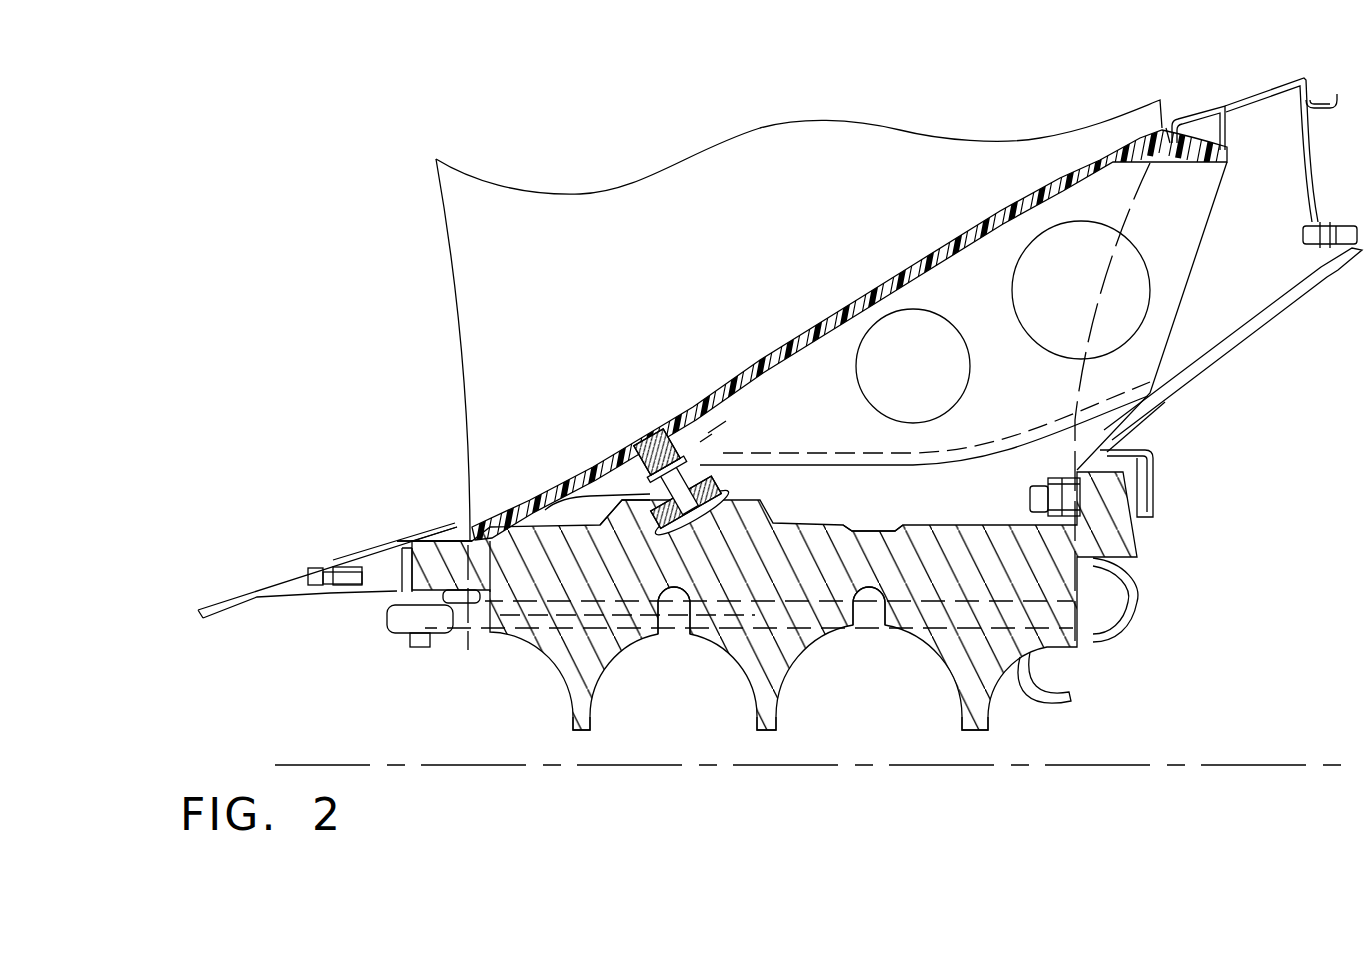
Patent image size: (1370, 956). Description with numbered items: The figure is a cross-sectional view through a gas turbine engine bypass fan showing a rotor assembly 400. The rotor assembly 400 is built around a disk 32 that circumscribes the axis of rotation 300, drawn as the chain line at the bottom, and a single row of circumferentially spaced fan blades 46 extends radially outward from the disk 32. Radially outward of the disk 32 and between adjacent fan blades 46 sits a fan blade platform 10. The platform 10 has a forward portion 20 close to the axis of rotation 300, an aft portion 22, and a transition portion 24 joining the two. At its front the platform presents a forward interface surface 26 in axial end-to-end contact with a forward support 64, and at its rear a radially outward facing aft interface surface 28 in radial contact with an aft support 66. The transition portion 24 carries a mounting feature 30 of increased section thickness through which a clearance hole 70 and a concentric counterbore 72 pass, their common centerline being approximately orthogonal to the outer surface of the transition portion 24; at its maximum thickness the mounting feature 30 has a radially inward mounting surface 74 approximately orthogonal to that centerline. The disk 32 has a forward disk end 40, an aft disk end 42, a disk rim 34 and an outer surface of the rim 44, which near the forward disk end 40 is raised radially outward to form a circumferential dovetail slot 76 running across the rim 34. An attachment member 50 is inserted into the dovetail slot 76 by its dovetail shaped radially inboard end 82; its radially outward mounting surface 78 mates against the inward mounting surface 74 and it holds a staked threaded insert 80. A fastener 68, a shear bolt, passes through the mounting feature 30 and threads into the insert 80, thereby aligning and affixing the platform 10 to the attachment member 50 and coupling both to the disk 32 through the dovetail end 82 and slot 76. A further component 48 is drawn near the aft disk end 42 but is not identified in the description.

The fan blade platform 10 is at (1172, 128).
The forward portion 20 is at (514, 510).
The aft portion 22 is at (1005, 216).
The transition portion 24 is at (684, 456).
The forward interface surface 26 is at (460, 525).
The aft interface surface 28 is at (1185, 140).
The mounting feature 30 is at (718, 422).
The disk 32 is at (795, 665).
The disk rim 34 is at (760, 588).
The forward disk end 40 is at (488, 605).
The aft disk end 42 is at (1042, 660).
The outer surface of the rim 44 is at (993, 525).
The fan blades 46 is at (497, 265).
The seal retainer 48 is at (1070, 590).
The attachment member 50 is at (600, 490).
The forward support 64 is at (438, 534).
The aft support 66 is at (1258, 88).
The fastener 68 is at (648, 440).
The clearance hole 70 is at (712, 434).
The counterbore 72 is at (658, 433).
The radially inward mounting surface 74 is at (648, 455).
The circumferential dovetail slot 76 is at (640, 530).
The radially outward mounting surface 78 is at (700, 481).
The staked threaded insert 80 is at (720, 504).
The dovetail shaped radially inboard end 82 is at (768, 521).
The axis of rotation 300 is at (350, 765).
The gas turbine engine rotor assembly 400 is at (372, 98).